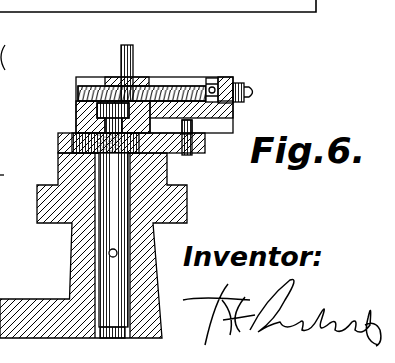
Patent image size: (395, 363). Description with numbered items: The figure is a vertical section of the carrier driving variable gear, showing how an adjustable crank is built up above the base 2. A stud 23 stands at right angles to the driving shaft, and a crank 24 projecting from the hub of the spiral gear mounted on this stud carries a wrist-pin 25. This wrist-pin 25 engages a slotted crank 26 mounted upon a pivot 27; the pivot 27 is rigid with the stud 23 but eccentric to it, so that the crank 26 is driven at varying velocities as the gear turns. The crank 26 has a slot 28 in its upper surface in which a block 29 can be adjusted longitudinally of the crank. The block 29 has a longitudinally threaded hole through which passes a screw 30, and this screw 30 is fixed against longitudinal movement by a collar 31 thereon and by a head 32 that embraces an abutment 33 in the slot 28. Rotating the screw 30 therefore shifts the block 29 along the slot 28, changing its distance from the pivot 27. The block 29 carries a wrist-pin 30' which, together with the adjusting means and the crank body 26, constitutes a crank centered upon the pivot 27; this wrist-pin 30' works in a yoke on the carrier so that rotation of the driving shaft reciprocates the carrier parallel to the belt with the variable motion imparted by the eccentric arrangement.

The base 2 is at (48, 307).
The stud 23 is at (107, 240).
The crank 24 is at (199, 156).
The wrist-pin 25 is at (185, 126).
The slotted crank 26 is at (233, 115).
The pivot 27 is at (105, 126).
The slot 28 is at (168, 90).
The block 29 is at (115, 78).
The screw 30 is at (142, 61).
The wrist-pin 30' is at (116, 57).
The collar 31 is at (212, 82).
The head 32 is at (238, 82).
The abutment 33 is at (224, 80).